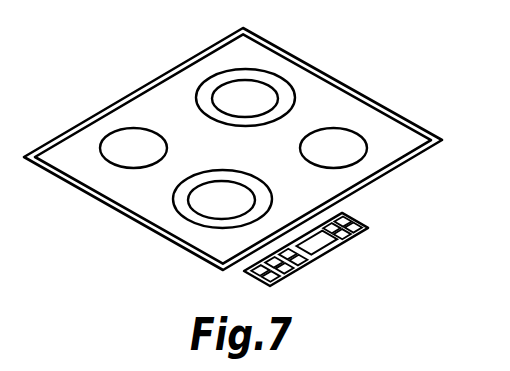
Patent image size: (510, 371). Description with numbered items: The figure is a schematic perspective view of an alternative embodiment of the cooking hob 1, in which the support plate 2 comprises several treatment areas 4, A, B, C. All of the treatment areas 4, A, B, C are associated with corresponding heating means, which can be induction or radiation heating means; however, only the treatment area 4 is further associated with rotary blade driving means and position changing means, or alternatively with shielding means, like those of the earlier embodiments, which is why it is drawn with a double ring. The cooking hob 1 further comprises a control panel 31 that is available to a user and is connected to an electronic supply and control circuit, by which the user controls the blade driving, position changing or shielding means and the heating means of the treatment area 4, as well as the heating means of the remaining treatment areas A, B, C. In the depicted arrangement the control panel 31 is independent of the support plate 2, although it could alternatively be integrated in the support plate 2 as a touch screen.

The cooking hob 1 is at (233, 144).
The support plate 2 is at (325, 95).
The treatment area 4 is at (203, 202).
The treatment area A is at (120, 145).
The treatment area B is at (248, 83).
The treatment area C is at (350, 140).
The control panel 31 is at (333, 249).